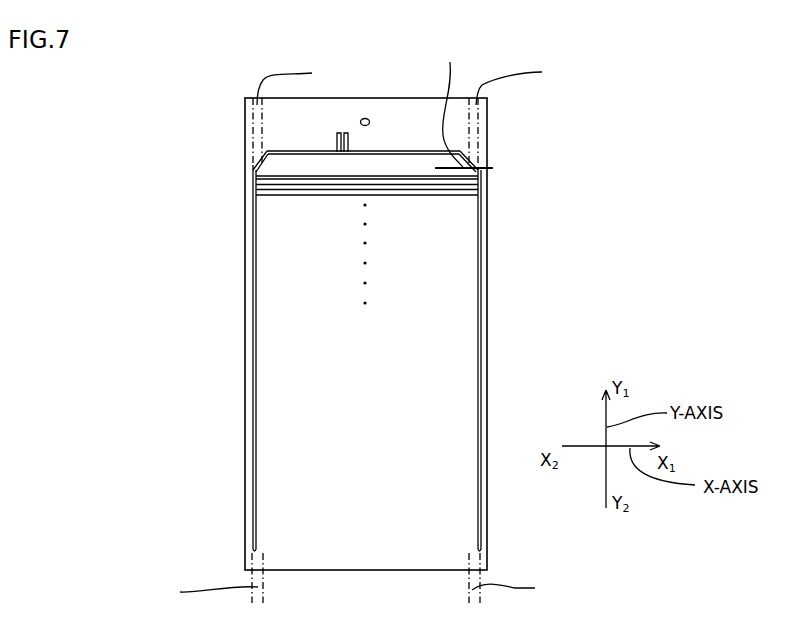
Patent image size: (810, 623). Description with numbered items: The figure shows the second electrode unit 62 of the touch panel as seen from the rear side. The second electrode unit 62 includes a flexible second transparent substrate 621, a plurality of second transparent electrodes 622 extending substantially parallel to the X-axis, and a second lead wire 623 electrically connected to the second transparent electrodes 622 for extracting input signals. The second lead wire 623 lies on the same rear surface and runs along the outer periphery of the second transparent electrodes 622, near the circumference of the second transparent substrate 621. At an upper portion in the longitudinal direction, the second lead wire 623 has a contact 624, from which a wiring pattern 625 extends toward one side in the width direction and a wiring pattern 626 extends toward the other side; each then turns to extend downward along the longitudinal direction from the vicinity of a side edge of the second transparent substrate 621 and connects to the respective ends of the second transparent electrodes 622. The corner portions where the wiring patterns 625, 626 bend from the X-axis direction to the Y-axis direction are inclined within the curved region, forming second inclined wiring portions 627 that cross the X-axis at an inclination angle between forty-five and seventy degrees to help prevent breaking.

The second electrode unit 62 is at (636, 75).
The second transparent substrate 621 is at (320, 433).
The second transparent electrode 622 is at (437, 197).
The second lead wire 623 is at (68, 228).
The contact 624 is at (347, 126).
The wiring pattern 625 is at (360, 150).
The wiring pattern 626 is at (297, 150).
The second inclined wiring portion 627 is at (256, 158).